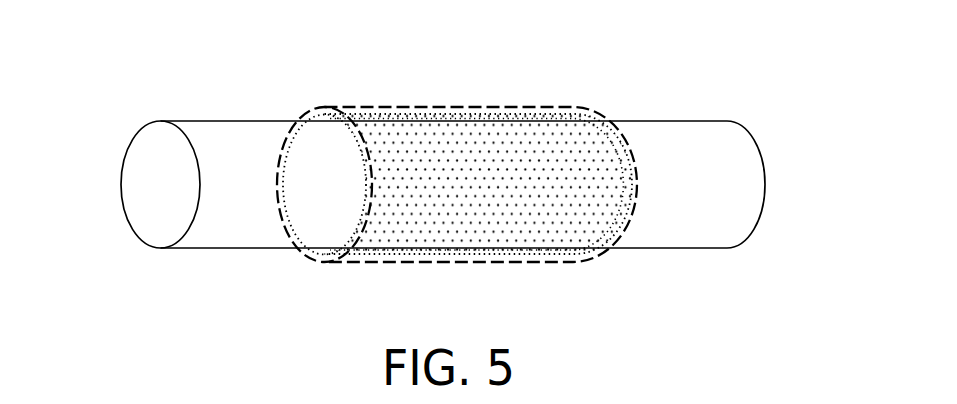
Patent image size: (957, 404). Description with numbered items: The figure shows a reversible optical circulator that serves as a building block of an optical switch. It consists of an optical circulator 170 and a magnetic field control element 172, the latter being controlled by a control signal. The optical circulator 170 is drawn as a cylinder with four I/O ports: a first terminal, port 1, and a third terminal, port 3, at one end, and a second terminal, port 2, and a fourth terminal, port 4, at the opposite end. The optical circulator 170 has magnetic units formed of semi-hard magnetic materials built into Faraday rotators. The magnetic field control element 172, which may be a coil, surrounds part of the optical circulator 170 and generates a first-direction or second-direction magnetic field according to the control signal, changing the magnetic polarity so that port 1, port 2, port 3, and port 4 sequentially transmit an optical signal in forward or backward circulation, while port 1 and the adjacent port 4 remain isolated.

The optical circulator 170 is at (213, 121).
The magnetic field control element 172 is at (378, 107).
The first terminal (port 1) 1 is at (161, 180).
The second terminal (port 2) 2 is at (765, 178).
The third terminal (port 3) 3 is at (160, 187).
The fourth terminal (port 4) 4 is at (765, 188).